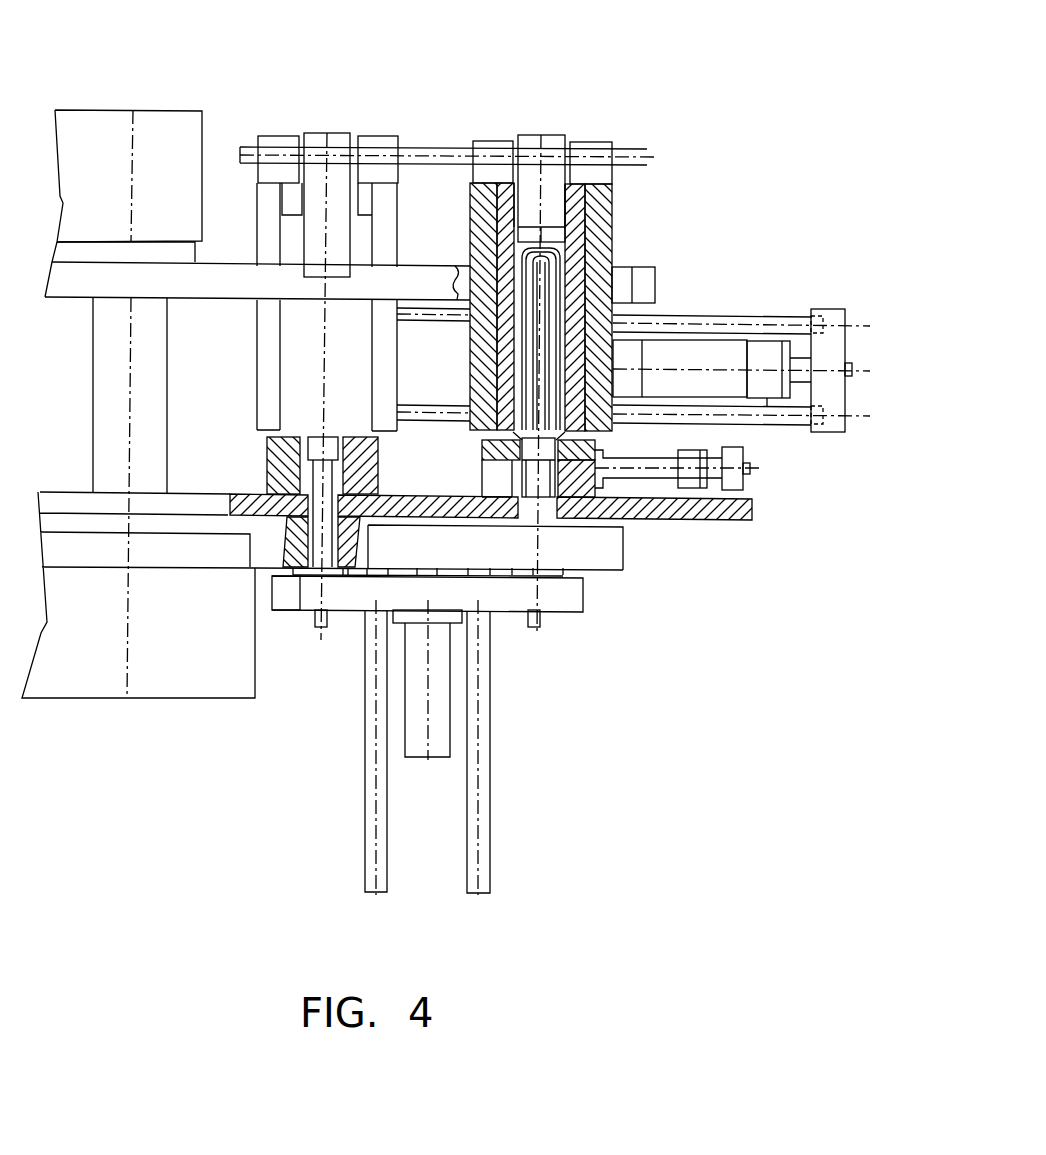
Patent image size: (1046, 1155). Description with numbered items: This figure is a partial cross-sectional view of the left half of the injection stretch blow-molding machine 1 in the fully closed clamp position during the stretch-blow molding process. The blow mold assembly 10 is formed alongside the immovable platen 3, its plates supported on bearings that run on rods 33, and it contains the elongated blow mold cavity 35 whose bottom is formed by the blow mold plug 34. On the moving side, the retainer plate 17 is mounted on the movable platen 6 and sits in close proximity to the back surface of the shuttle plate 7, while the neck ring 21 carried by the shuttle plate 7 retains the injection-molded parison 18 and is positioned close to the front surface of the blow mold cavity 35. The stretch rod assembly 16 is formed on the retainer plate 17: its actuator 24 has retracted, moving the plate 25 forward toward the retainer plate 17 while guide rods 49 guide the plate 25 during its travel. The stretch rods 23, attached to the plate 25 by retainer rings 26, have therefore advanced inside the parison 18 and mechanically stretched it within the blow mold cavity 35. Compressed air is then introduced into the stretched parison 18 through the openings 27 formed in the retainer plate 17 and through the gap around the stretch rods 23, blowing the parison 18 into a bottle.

The injection stretch blow-molding machine 1 is at (87, 132).
The immovable platen 3 is at (161, 130).
The movable platen 6 is at (80, 658).
The shuttle plate 7 is at (752, 508).
The blow mold assembly 10 is at (598, 210).
The stretch rod assembly 16 is at (568, 598).
The retainer plate 17 is at (595, 548).
The parison 18 is at (549, 348).
The neck ring 21 is at (588, 460).
The stretch rod 23 is at (543, 280).
The actuator 24 is at (440, 713).
The plate 25 is at (287, 598).
The retainer ring 26 is at (552, 574).
The opening 27 is at (343, 572).
The rod 33 is at (437, 155).
The blow mold plug 34 is at (554, 237).
The blow mold cavity 35 is at (507, 185).
The guide rod 49 is at (483, 680).